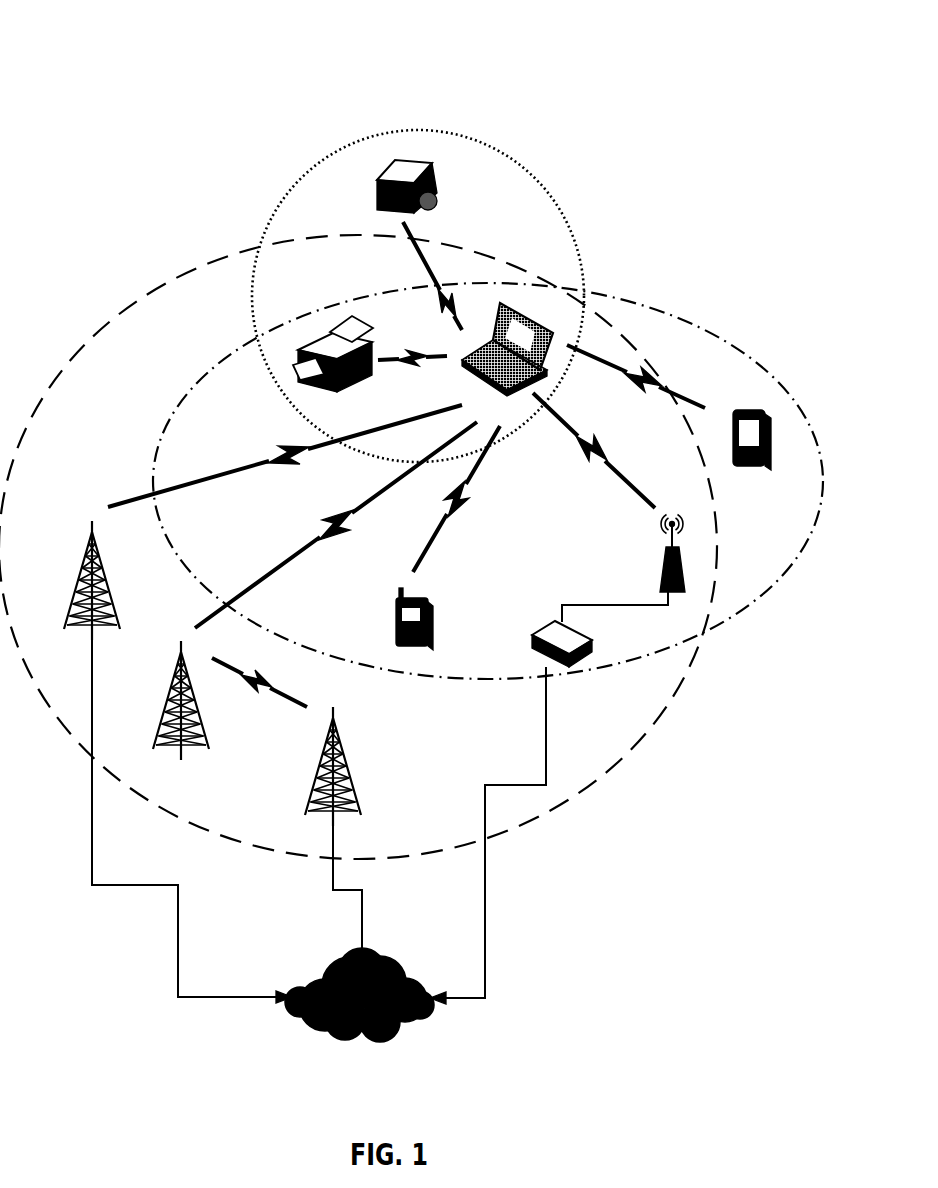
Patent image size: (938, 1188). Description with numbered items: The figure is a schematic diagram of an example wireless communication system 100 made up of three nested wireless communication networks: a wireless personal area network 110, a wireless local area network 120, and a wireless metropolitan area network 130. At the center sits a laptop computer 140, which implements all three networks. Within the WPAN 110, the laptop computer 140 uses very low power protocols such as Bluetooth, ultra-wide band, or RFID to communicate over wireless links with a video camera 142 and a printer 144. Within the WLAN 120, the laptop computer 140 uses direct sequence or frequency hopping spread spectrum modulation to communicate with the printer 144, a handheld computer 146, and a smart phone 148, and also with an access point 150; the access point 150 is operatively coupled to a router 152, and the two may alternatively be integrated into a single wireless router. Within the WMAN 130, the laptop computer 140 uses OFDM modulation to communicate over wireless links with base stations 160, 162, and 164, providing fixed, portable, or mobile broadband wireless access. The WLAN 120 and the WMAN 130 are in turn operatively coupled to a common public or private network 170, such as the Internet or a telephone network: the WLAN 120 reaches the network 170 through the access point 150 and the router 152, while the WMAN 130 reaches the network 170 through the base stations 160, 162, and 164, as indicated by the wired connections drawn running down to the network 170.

The wireless communication system 100 is at (101, 60).
The wireless personal area network 110 is at (420, 128).
The wireless local area network 120 is at (152, 476).
The wireless metropolitan area network 130 is at (180, 272).
The laptop computer 140 is at (516, 300).
The video camera 142 is at (415, 195).
The printer 144 is at (343, 388).
The handheld computer 146 is at (747, 410).
The smart phone 148 is at (420, 602).
The access point 150 is at (660, 567).
The router 152 is at (542, 622).
The base station 160 is at (82, 563).
The base station 162 is at (172, 693).
The base station 164 is at (323, 753).
The common public or private network 170 is at (317, 967).